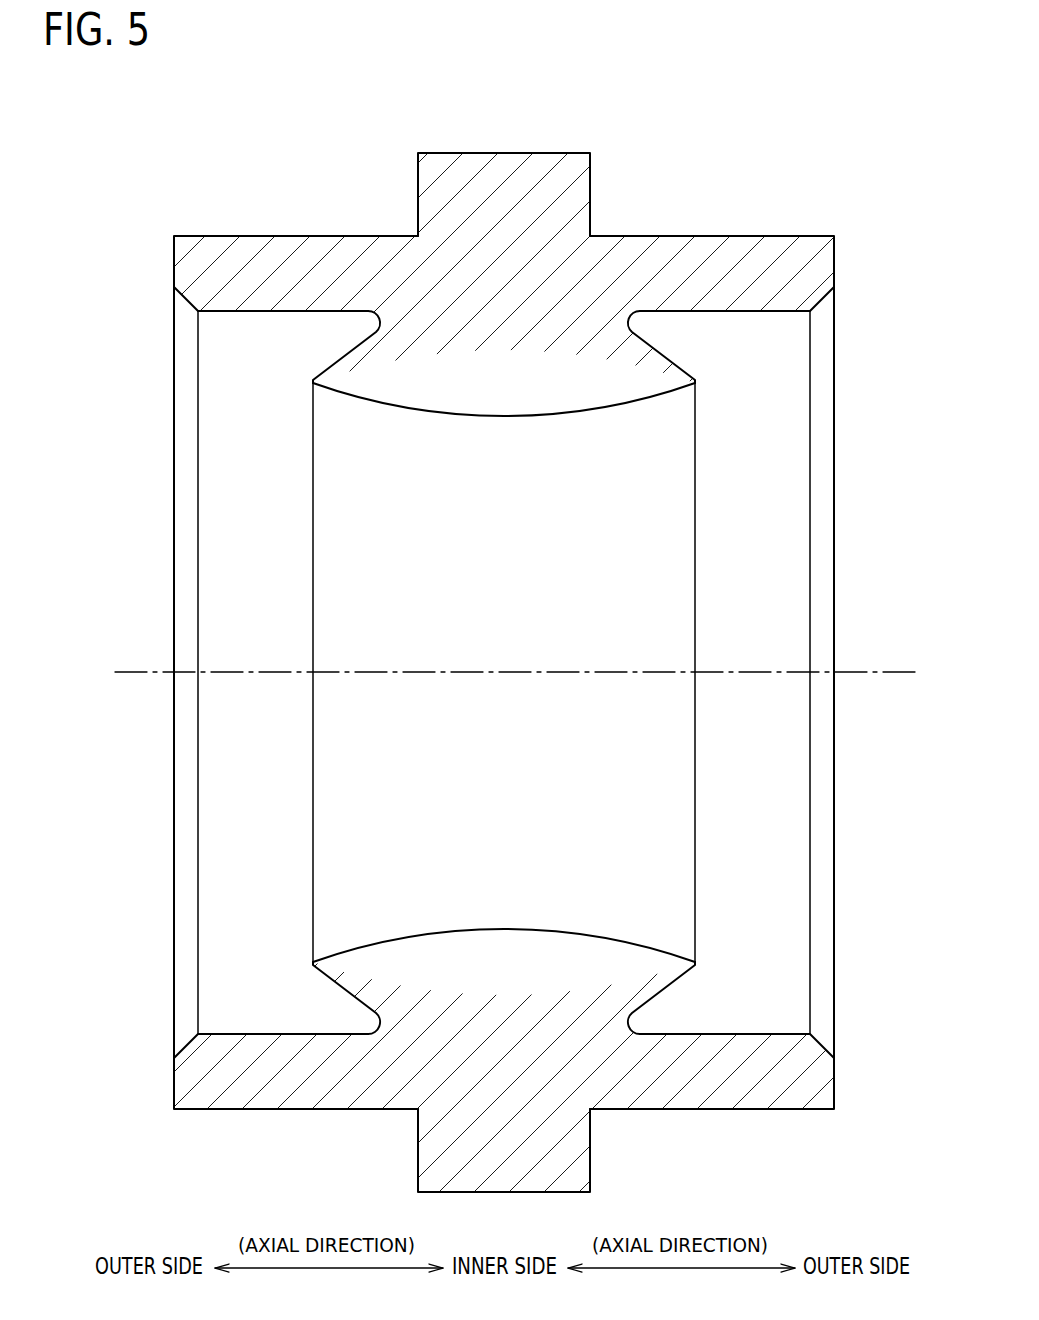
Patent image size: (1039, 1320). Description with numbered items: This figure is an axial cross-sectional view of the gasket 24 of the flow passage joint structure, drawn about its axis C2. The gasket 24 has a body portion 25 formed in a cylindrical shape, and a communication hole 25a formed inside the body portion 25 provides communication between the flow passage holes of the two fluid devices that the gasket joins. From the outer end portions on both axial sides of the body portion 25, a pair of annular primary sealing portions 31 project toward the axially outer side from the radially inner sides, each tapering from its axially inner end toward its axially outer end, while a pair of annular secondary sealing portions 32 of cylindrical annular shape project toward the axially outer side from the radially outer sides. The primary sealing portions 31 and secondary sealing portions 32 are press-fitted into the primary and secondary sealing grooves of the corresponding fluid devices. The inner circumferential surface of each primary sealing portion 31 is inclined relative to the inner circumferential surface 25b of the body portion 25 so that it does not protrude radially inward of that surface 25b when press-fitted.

The gasket 24 is at (192, 143).
The body portion 25 is at (503, 167).
The communication hole 25a is at (525, 656).
The inner circumferential surface 25b is at (500, 419).
The primary sealing portion 31 is at (350, 389).
The secondary sealing portion 32 is at (282, 250).
The axis C2 is at (883, 670).